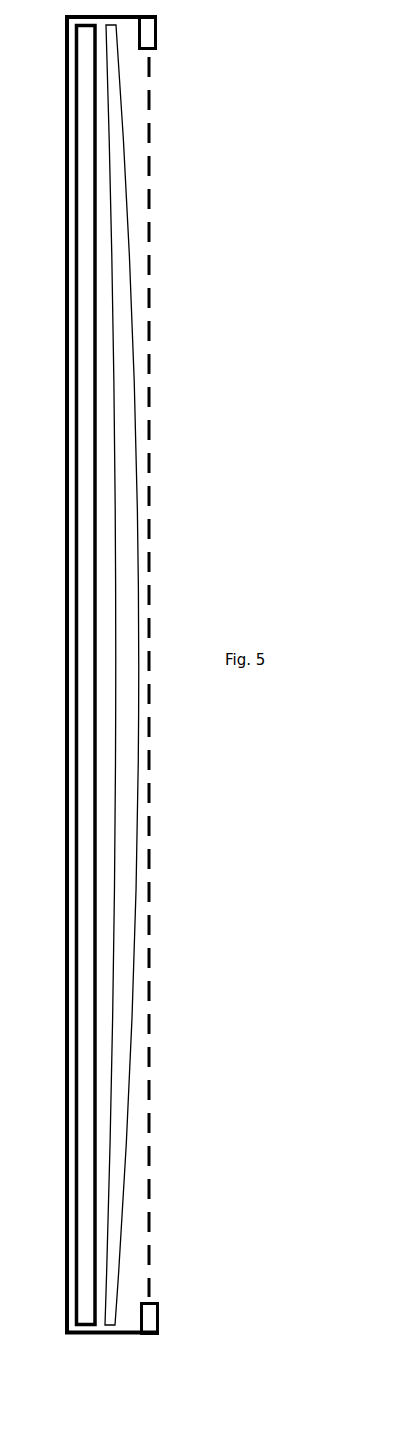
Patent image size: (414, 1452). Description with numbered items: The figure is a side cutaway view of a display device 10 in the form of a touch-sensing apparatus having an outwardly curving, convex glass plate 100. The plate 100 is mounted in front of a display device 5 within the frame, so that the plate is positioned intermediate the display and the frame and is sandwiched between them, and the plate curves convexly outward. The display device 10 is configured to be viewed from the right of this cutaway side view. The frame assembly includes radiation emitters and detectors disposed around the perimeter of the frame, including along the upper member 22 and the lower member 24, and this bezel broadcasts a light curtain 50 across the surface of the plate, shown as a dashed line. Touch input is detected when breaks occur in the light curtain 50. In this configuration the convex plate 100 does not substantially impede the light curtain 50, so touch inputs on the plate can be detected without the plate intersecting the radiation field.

The display device 10 is at (186, 946).
The display device 5 is at (83, 342).
The plate 100 is at (126, 318).
The light curtain 50 is at (150, 163).
The upper member 22 is at (150, 43).
The lower member 24 is at (148, 1318).